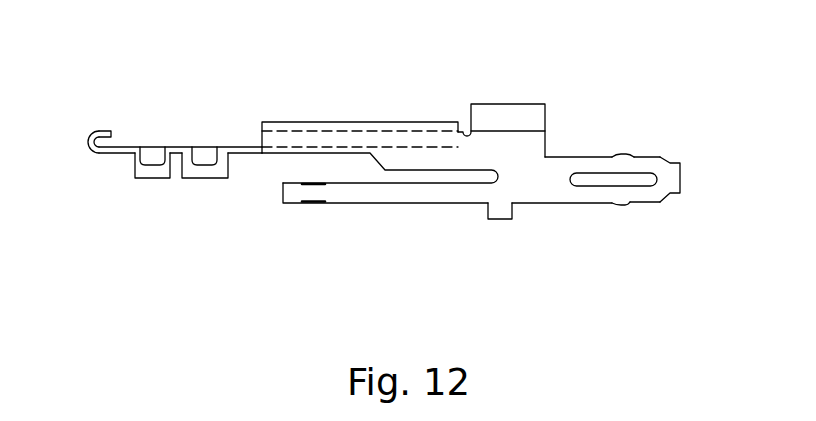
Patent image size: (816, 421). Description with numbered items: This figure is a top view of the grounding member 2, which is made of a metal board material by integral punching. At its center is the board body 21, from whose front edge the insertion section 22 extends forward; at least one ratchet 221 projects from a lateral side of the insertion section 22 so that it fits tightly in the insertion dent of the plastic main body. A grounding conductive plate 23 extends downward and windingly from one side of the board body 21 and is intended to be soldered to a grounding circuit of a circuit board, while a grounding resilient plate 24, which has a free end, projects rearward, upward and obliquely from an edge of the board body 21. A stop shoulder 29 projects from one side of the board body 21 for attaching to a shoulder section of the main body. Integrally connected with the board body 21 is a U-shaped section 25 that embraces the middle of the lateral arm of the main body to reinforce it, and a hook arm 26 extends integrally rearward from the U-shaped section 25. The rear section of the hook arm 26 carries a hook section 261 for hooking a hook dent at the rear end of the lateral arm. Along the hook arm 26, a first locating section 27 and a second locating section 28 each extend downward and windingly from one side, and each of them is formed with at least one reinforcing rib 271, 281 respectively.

The grounding member 2 is at (401, 119).
The board body 21 is at (513, 163).
The insertion section 22 is at (652, 172).
The ratchet 221 is at (616, 154).
The grounding conductive plate 23 is at (509, 116).
The grounding resilient plate 24 is at (325, 204).
The U-shaped section 25 is at (312, 122).
The hook arm 26 is at (118, 153).
The hook section 261 is at (103, 129).
The first locating section 27 is at (203, 178).
The reinforcing rib 271 is at (203, 150).
The second locating section 28 is at (151, 178).
The reinforcing rib 281 is at (149, 150).
The stop shoulder 29 is at (500, 219).